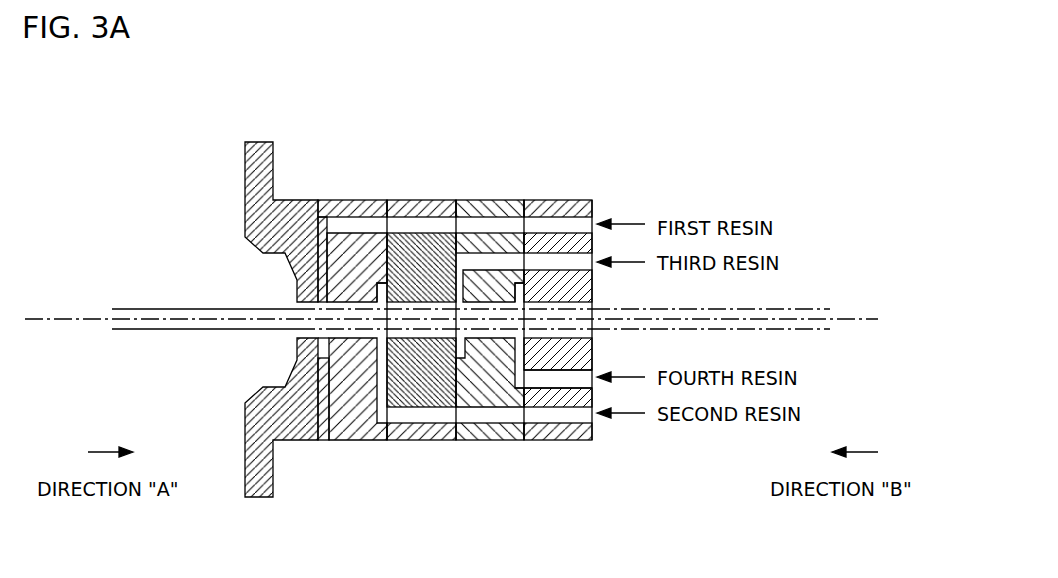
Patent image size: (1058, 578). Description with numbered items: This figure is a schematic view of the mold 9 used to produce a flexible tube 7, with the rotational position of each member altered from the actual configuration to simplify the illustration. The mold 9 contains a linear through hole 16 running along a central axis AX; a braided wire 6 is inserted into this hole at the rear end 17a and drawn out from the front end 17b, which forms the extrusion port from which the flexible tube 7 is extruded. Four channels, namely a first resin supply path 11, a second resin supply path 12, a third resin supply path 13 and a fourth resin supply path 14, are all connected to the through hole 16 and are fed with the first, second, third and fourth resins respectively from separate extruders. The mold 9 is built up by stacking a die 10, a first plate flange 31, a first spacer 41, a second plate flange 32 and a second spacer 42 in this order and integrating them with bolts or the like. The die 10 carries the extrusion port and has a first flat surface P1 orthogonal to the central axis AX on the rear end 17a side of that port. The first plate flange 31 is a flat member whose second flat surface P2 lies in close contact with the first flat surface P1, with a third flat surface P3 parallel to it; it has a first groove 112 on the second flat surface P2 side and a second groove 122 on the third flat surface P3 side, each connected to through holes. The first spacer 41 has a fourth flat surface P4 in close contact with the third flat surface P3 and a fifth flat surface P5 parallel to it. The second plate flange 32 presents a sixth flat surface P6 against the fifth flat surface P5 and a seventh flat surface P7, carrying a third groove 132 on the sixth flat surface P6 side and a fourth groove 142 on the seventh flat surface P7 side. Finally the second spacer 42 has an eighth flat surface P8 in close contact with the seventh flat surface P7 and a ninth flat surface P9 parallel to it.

The mold 9 is at (208, 193).
The die 10 is at (283, 200).
The first resin supply path 11 is at (391, 206).
The second resin supply path 12 is at (407, 439).
The third resin supply path 13 is at (525, 263).
The fourth resin supply path 14 is at (580, 380).
The linear through hole 16 is at (365, 308).
The first plate flange 31 is at (355, 200).
The second plate flange 32 is at (489, 200).
The first spacer 41 is at (422, 200).
The second spacer 42 is at (558, 200).
The first groove 112 is at (323, 270).
The second groove 122 is at (385, 363).
The third groove 132 is at (520, 290).
The fourth groove 142 is at (520, 363).
The rear end 17a is at (593, 320).
The front end 17b is at (297, 332).
The flexible tube 7 is at (146, 309).
The braided wire 6 is at (815, 308).
The central axis AX is at (55, 319).
The first flat surface P1 is at (316, 438).
The second flat surface P2 is at (328, 432).
The third flat surface P3 is at (384, 440).
The fourth flat surface P4 is at (390, 440).
The fifth flat surface P5 is at (453, 439).
The sixth flat surface P6 is at (459, 439).
The seventh flat surface P7 is at (515, 439).
The eighth flat surface P8 is at (525, 432).
The ninth flat surface P9 is at (594, 440).